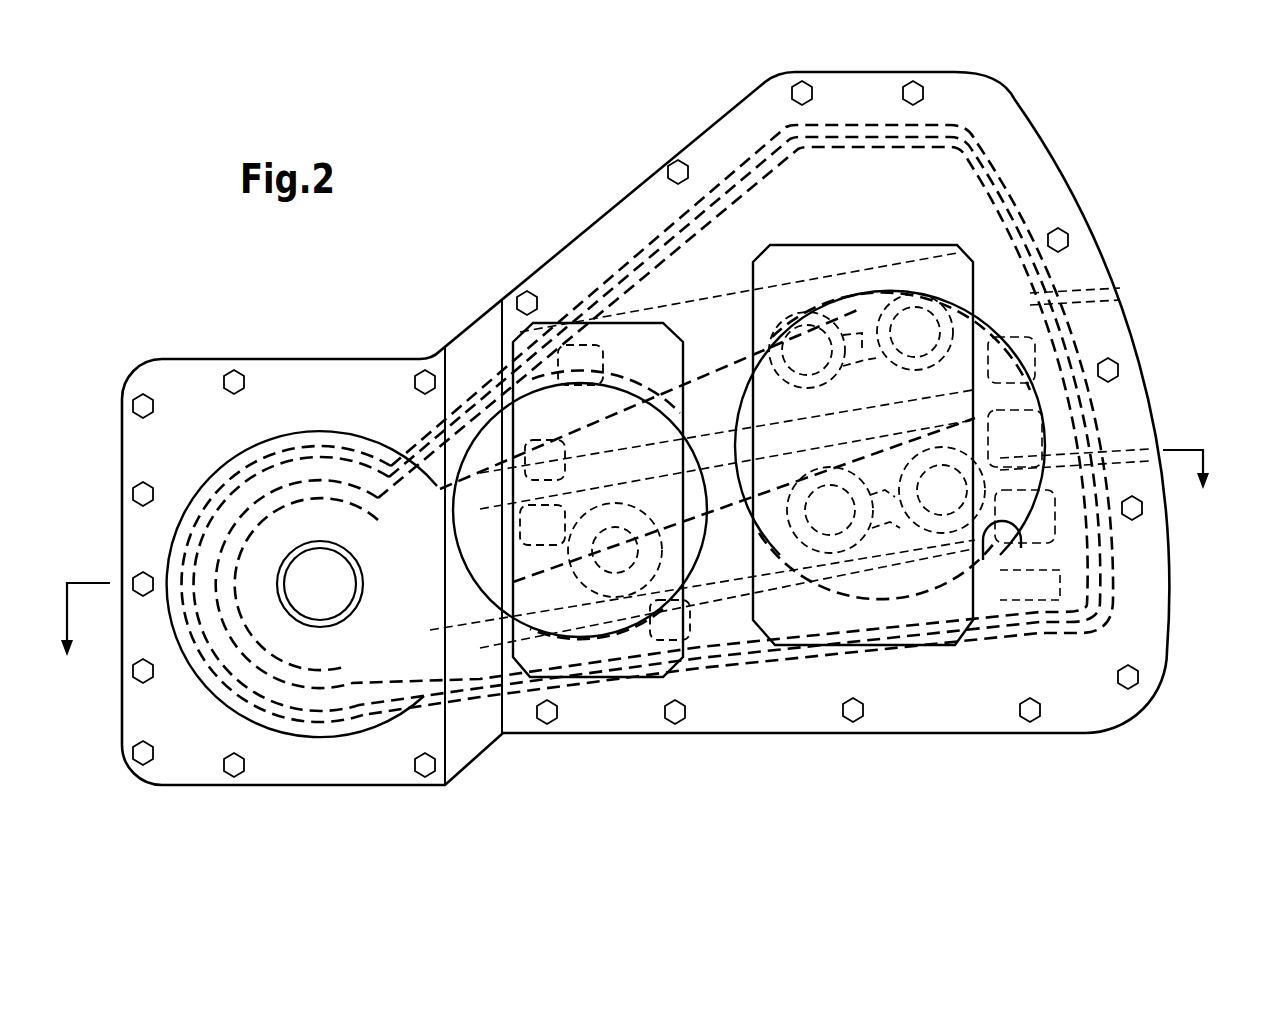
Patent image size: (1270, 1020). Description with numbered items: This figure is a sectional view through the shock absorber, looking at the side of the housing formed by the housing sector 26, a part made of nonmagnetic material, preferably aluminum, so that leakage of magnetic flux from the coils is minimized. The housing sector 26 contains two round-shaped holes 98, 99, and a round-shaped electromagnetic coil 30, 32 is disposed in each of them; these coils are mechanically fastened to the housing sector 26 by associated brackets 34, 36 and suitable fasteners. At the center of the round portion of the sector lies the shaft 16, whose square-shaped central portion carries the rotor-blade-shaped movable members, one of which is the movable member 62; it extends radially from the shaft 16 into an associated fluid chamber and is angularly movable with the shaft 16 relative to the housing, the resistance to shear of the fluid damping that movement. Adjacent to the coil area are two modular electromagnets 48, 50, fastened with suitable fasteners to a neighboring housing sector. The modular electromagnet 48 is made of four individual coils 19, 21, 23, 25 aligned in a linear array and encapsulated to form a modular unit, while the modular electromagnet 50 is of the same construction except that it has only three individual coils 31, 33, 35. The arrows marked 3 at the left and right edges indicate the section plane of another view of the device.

The section line 3- 3 is at (640, 569).
The shaft 16 is at (313, 599).
The individual coil 19 is at (618, 600).
The individual coil 21 is at (710, 600).
The individual coil 23 is at (850, 553).
The individual coil 25 is at (937, 543).
The housing sector 26 is at (191, 395).
The round-shaped electromagnetic coil 30 is at (457, 600).
The individual coil 31 is at (697, 317).
The round-shaped electromagnetic coil 32 is at (1000, 560).
The individual coil 33 is at (790, 300).
The bracket 34 is at (700, 622).
The individual coil 35 is at (950, 243).
The bracket 36 is at (975, 592).
The modular electromagnet 48 is at (897, 563).
The modular electromagnet 50 is at (880, 273).
The movable member 62 is at (503, 403).
The round-shaped hole 98 is at (573, 373).
The round-shaped hole 99 is at (1027, 523).